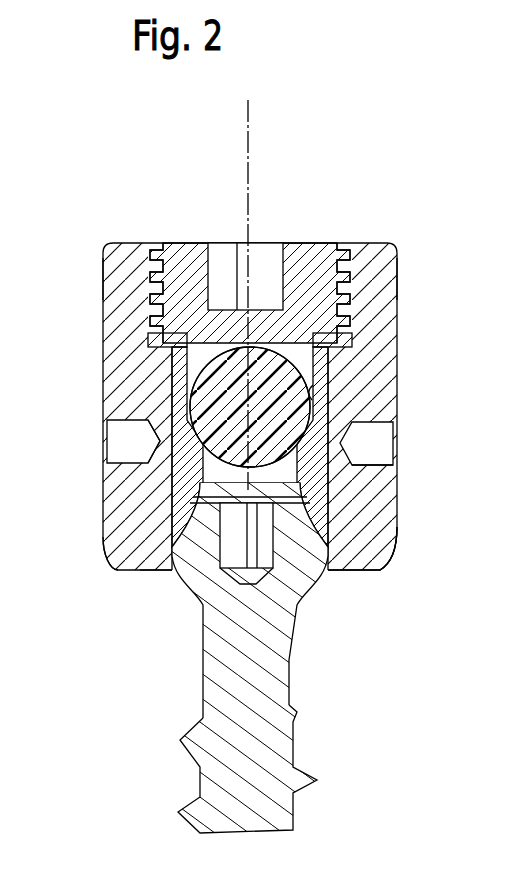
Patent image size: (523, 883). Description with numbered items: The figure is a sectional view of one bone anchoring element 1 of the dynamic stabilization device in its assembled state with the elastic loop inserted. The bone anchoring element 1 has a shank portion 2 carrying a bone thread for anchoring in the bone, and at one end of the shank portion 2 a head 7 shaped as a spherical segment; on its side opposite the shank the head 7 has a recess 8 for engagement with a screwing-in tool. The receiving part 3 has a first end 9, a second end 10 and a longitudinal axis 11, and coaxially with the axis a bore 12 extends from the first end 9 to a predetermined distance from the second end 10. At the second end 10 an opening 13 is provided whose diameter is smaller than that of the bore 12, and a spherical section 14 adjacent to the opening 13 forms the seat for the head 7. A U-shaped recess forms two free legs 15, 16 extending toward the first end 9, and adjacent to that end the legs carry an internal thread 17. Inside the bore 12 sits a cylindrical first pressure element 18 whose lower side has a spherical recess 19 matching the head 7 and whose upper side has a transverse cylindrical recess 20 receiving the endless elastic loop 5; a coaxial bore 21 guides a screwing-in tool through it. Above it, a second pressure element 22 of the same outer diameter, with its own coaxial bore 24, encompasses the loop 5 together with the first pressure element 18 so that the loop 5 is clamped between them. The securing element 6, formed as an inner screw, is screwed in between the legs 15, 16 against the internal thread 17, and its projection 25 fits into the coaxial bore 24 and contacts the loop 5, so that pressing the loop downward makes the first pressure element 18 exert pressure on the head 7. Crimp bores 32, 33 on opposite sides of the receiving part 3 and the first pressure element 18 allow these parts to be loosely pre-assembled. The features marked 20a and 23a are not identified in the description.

The bone anchoring element 1 is at (330, 731).
The shank portion 2 is at (298, 807).
The receiving part 3 is at (103, 507).
The endless elastic loop 5 is at (232, 349).
The securing element 6 is at (307, 243).
The head 7 is at (264, 658).
The recess 8 is at (268, 576).
The first end 9 is at (364, 245).
The second end 10 is at (366, 573).
The longitudinal axis 11 is at (248, 135).
The bore 12 is at (250, 433).
The opening 13 is at (170, 573).
The spherical section 14 is at (176, 541).
The free leg 15 is at (118, 280).
The free leg 16 is at (392, 272).
The internal thread 17 is at (158, 256).
The first pressure element 18 is at (330, 407).
The spherical recess 19 is at (332, 523).
The cylindrical recess 20 is at (330, 392).
The recess 20a is at (158, 432).
The coaxial bore 21 is at (340, 463).
The second pressure element 22 is at (180, 395).
The tip of recess 23a is at (160, 432).
The coaxial bore 24 is at (330, 350).
The projection 25 is at (185, 343).
The crimp bore 32 is at (333, 477).
The crimp bore 33 is at (383, 430).